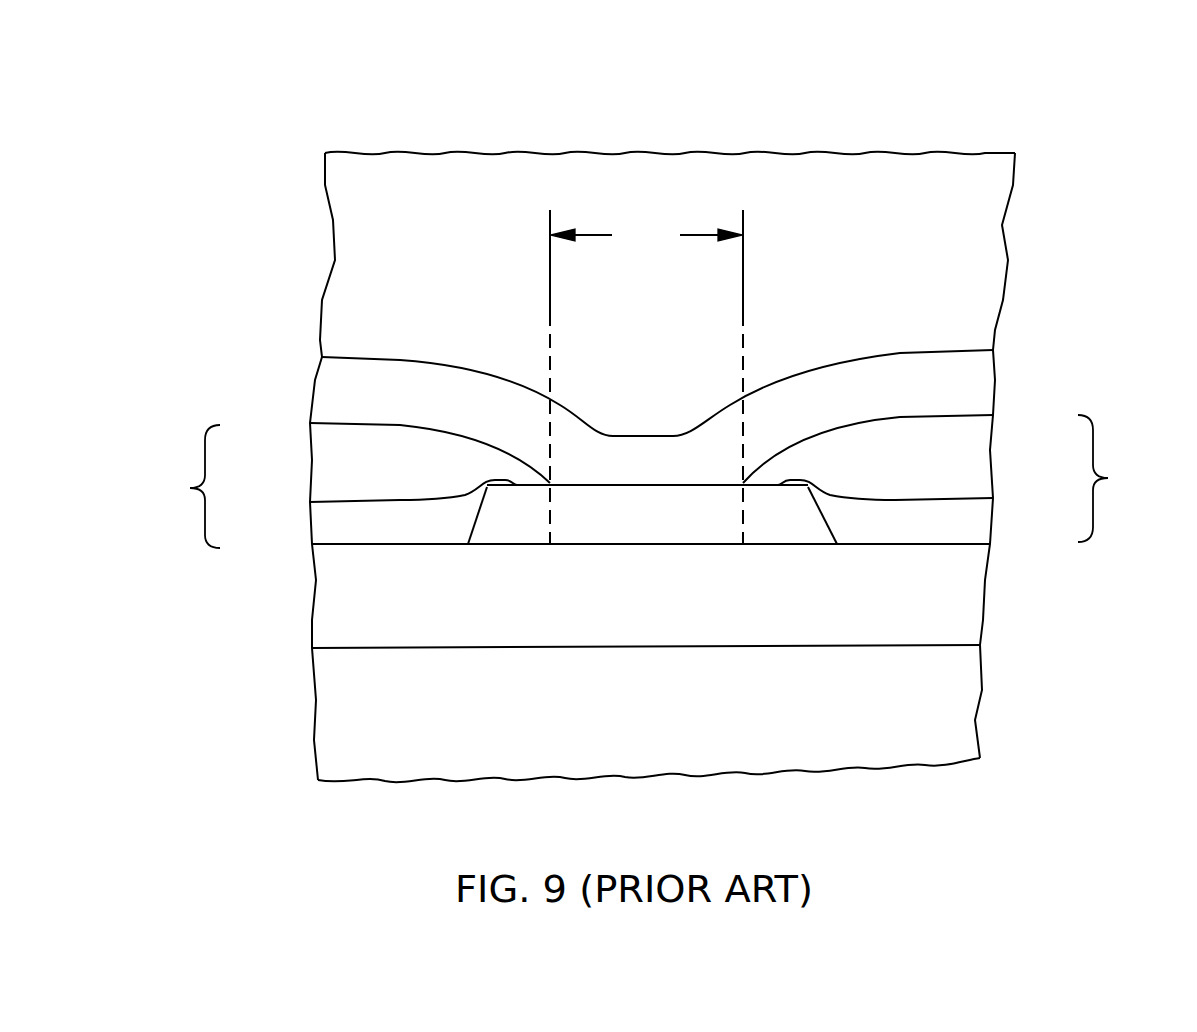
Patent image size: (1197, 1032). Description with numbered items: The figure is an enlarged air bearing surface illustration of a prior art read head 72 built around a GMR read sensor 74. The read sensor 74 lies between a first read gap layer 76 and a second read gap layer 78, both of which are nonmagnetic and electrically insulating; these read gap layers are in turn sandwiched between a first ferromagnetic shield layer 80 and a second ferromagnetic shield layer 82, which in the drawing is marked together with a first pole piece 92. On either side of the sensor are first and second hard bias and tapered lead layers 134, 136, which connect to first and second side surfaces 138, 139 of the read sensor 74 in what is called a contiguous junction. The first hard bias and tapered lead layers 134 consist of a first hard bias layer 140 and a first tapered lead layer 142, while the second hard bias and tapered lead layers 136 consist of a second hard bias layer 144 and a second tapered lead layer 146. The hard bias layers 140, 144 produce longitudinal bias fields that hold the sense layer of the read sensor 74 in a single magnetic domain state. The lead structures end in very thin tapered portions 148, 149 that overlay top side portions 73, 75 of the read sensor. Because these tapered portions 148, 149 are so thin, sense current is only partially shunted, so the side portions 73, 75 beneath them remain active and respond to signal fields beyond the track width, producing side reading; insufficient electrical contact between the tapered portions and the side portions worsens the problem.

The read head 72 is at (893, 118).
The second ferromagnetic shield layer 82 is at (842, 377).
The first pole piece layer 92 is at (937, 272).
The second read gap layer 78 is at (357, 388).
The first tapered lead layer 142 is at (325, 450).
The first hard bias layer 140 is at (325, 526).
The first hard bias and tapered lead layers 134 is at (182, 486).
The tapered portion 148 is at (523, 478).
The tapered portion 149 is at (771, 478).
The second tapered lead layer 146 is at (963, 447).
The second hard bias layer 144 is at (963, 525).
The second hard bias and tapered lead layers 136 is at (1120, 478).
The side portion of the read sensor 73 is at (527, 533).
The side portion of the read sensor 75 is at (802, 533).
The read sensor 74 is at (702, 522).
The first side surface 138 is at (470, 527).
The second side surface 139 is at (830, 523).
The first read gap layer 76 is at (323, 607).
The first ferromagnetic shield layer 80 is at (933, 703).